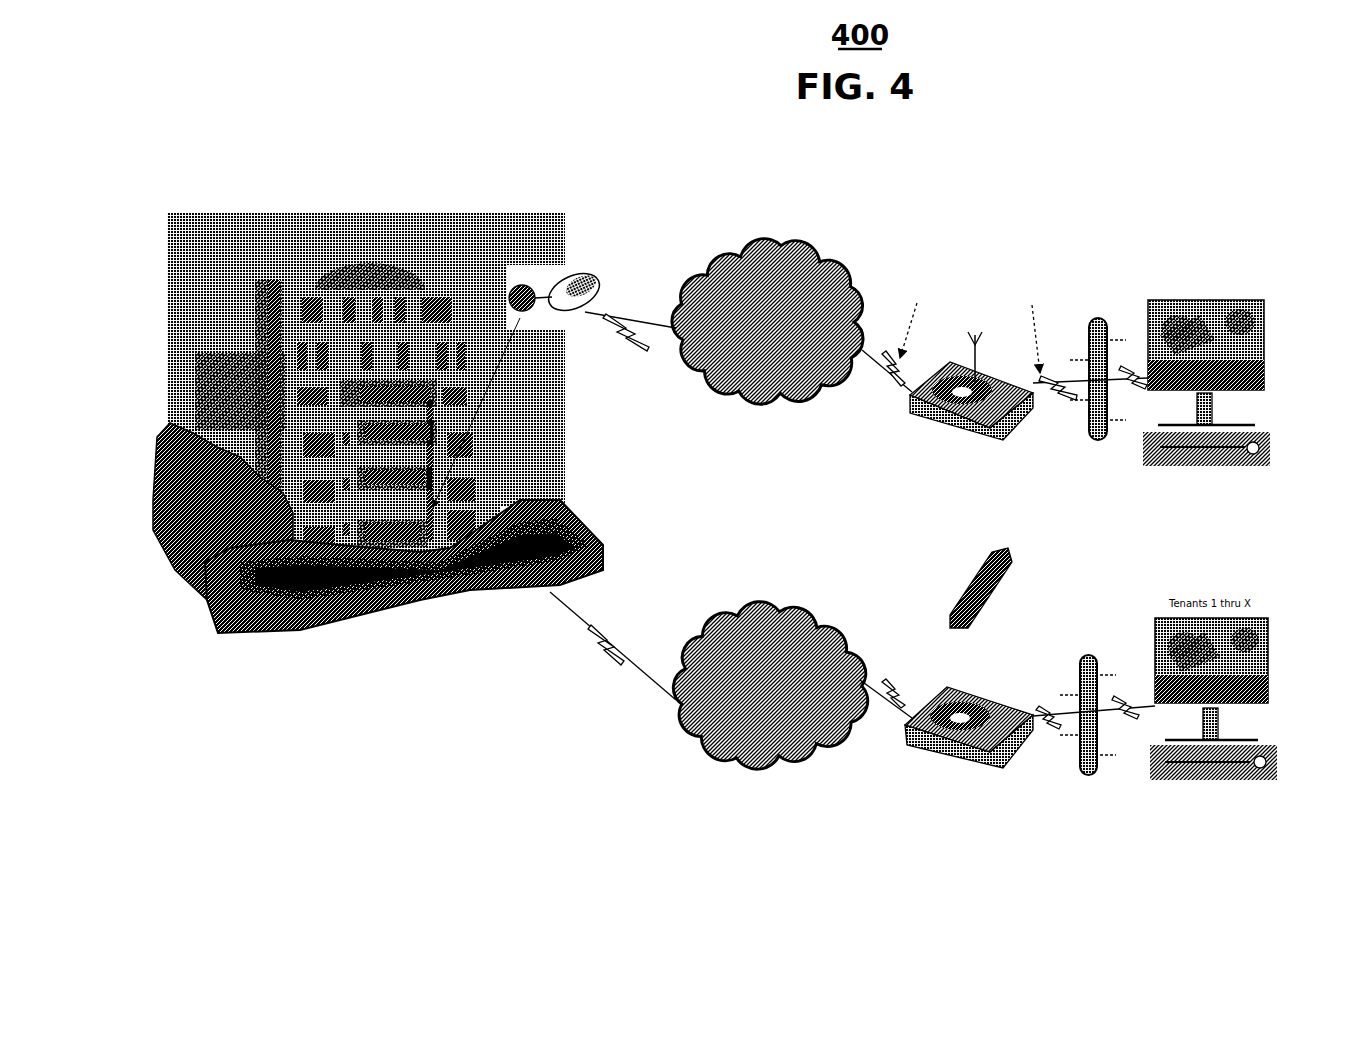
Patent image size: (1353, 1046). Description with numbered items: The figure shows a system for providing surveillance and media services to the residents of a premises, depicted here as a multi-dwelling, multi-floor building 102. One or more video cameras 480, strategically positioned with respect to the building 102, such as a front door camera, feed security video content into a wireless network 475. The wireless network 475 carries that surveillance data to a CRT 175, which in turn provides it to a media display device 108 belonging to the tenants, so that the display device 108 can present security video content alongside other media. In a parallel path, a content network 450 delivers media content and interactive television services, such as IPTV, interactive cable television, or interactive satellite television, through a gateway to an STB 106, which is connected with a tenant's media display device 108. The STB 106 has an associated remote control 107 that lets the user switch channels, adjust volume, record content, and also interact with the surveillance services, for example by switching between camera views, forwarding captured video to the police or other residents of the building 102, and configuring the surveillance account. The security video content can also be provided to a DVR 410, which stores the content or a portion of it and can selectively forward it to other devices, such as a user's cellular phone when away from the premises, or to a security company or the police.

The building 102 is at (290, 277).
The video camera 480 is at (571, 275).
The wireless network 475 is at (758, 338).
The CRT 175 is at (957, 370).
The media display device 108 is at (1208, 300).
The remote control 107 is at (975, 595).
The STB 106 is at (1008, 700).
The content network 450 is at (760, 710).
The DVR 410 is at (1223, 780).